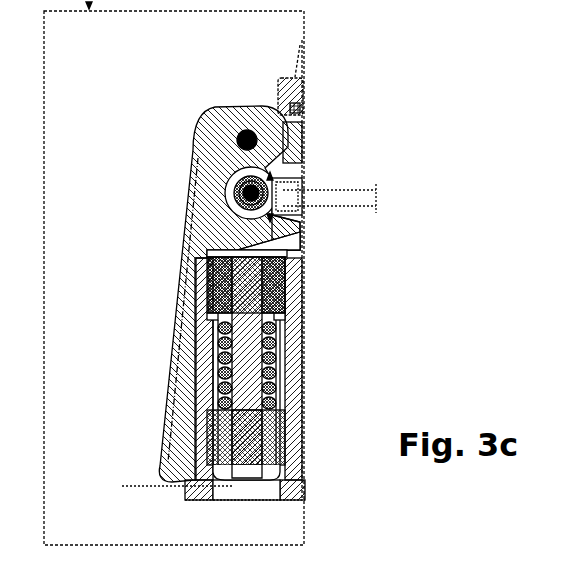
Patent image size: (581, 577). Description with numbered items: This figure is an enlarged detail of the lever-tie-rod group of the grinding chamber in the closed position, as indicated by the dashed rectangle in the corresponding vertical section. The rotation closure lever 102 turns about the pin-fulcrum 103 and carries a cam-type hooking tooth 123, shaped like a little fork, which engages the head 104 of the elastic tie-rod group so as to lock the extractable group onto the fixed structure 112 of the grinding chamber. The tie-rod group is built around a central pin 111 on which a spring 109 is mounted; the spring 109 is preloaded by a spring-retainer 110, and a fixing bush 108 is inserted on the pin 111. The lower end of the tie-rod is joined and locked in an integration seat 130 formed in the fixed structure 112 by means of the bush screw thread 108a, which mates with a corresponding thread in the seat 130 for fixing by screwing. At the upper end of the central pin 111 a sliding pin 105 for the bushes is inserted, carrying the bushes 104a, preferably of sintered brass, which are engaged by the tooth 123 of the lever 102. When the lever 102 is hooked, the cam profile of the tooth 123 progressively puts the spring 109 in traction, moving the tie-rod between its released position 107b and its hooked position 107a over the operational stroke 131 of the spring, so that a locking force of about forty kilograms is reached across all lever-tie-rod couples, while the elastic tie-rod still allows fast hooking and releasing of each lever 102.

The rotation closure lever 102 is at (195, 134).
The pin-fulcrum for lever 103 is at (240, 130).
The head of the tie-rod group 104 is at (275, 188).
The bush 104a is at (232, 190).
The sliding pin of the bushes 105 is at (241, 193).
The hooked tie-rod group 107a is at (273, 181).
The released tie-rod group 107b is at (302, 228).
The fixing bush of the tie-rod group 108 is at (218, 284).
The bush screw thread 108a is at (287, 290).
The spring of the tie-rod group 109 is at (222, 345).
The spring-retainer of the tie-rod group 110 is at (225, 433).
The pin of the tie-rod group 111 is at (245, 387).
The fixed structure of the grinding chamber 112 is at (292, 378).
The hooking tooth of the lever 123 is at (302, 250).
The integration seat of the tie-rod group 130 is at (157, 485).
The operational stroke of the spring 131 is at (351, 198).